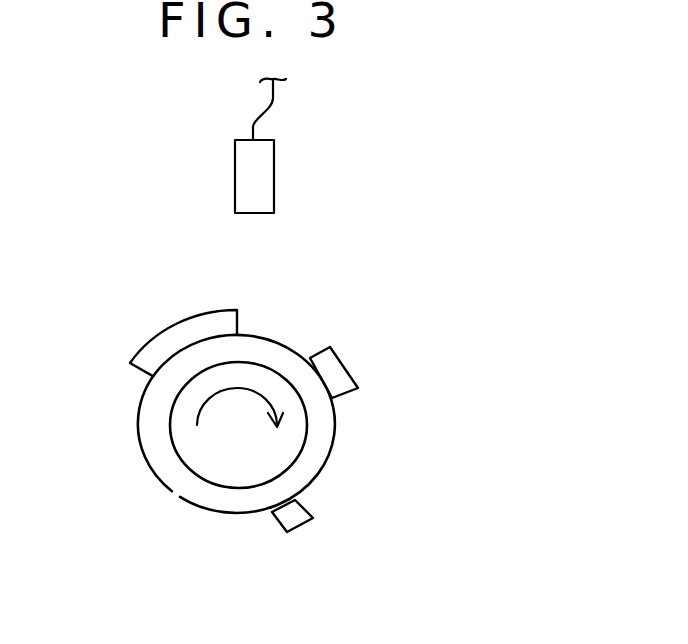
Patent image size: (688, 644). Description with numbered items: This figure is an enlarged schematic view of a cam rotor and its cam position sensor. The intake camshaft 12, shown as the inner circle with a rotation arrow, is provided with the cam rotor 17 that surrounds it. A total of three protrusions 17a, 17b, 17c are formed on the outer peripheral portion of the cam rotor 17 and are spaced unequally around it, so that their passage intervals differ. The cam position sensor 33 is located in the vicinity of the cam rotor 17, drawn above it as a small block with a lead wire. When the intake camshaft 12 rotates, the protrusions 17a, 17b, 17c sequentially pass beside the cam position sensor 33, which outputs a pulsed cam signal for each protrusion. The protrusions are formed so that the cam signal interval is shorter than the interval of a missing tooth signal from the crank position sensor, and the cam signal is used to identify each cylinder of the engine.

The cam position sensor 33 is at (275, 178).
The cam rotor 17 is at (336, 437).
The intake camshaft 12 is at (181, 427).
The protrusion 17a is at (297, 530).
The protrusion 17b is at (352, 367).
The protrusion 17c is at (177, 325).